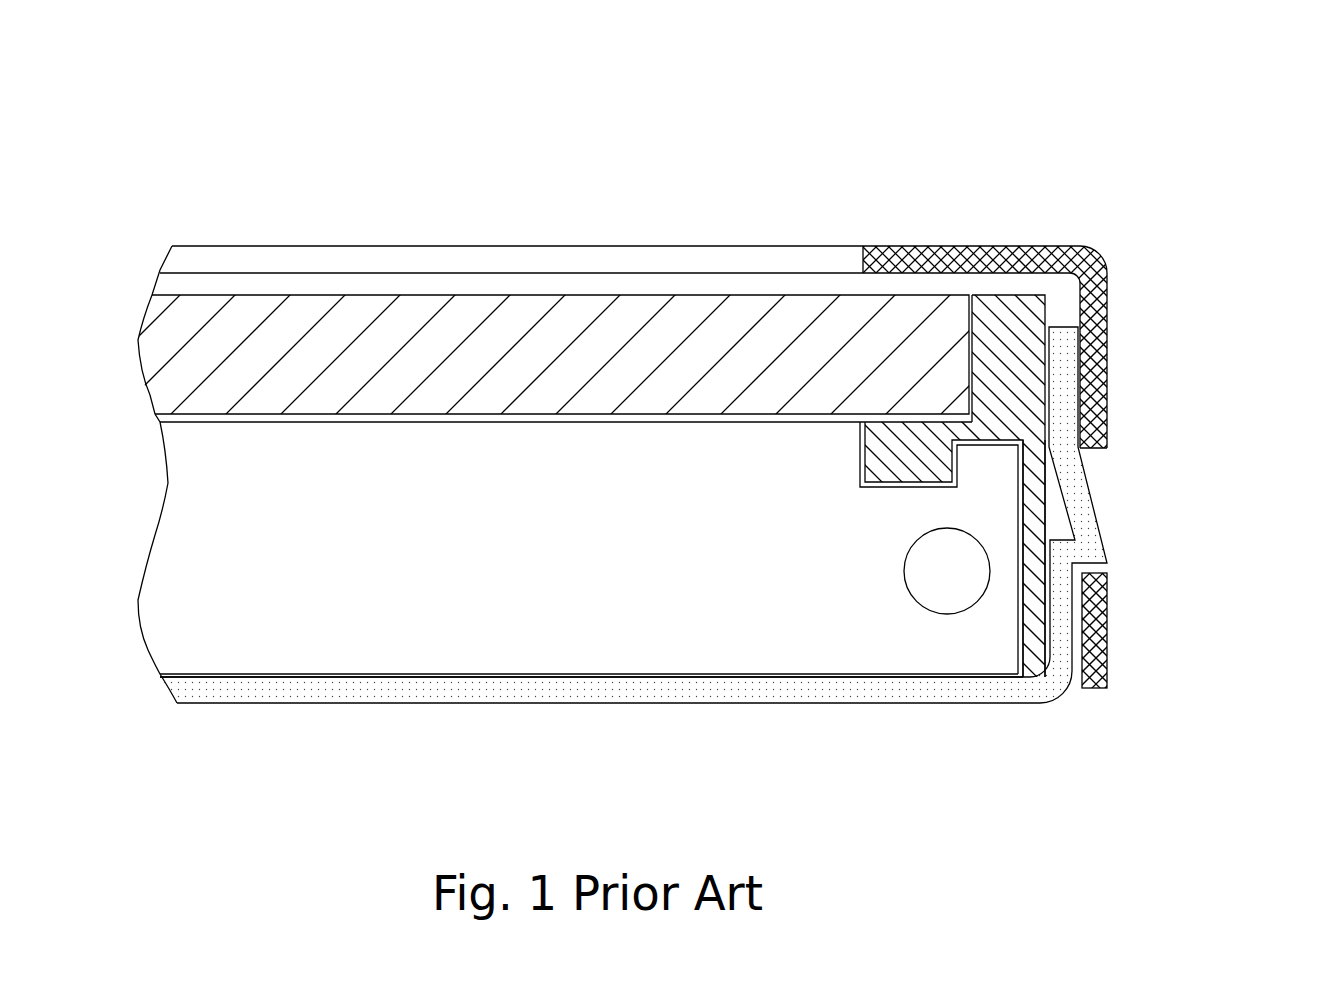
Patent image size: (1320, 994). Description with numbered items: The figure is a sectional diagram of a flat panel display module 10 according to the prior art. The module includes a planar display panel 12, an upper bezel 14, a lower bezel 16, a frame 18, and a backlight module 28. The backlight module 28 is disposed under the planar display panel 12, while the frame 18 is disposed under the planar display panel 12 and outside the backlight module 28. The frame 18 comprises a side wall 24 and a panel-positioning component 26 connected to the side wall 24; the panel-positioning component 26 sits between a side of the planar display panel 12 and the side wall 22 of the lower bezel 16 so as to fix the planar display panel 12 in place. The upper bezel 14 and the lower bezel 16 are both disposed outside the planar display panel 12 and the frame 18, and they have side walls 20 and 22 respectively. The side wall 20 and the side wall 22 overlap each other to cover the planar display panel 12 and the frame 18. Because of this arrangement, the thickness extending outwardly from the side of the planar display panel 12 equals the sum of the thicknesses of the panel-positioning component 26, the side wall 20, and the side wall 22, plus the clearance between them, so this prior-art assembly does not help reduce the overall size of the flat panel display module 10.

The flat panel display module 10 is at (1155, 157).
The planar display panel 12 is at (498, 336).
The upper bezel 14 is at (620, 247).
The lower bezel 16 is at (725, 705).
The frame 18 is at (1080, 390).
The side wall 20 is at (1107, 343).
The side wall 22 is at (1063, 638).
The side wall 24 is at (1035, 488).
The panel-positioning component 26 is at (1013, 398).
The backlight module 28 is at (612, 657).